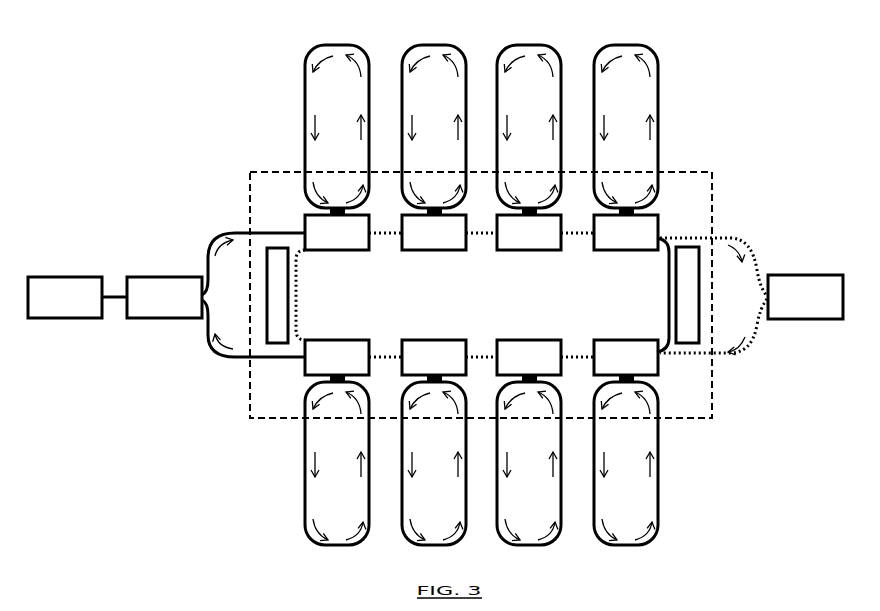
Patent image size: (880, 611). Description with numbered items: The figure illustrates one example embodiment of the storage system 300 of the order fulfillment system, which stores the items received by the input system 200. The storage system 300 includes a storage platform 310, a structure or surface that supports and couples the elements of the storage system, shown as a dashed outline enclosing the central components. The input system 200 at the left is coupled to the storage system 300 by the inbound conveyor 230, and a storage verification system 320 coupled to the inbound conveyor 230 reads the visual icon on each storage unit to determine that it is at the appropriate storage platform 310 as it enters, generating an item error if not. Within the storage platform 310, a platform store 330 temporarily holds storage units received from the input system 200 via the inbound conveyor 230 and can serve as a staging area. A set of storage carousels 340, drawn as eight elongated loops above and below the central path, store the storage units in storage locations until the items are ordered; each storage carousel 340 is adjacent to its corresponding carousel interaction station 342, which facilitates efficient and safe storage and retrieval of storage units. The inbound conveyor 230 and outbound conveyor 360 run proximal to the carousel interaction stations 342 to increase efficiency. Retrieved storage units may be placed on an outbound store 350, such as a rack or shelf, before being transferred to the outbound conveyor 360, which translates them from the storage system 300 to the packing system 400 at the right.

The input system 200 is at (74, 273).
The inbound conveyor 230 is at (235, 367).
The storage system 300 is at (828, 57).
The storage platform 310 is at (265, 168).
The storage verification system 320 is at (147, 321).
The platform store 330 is at (268, 346).
The storage carousel 340 is at (493, 63).
The carousel interaction station 342 is at (393, 233).
The outbound store 350 is at (700, 248).
The outbound conveyor 360 is at (724, 365).
The packing system 400 is at (805, 323).